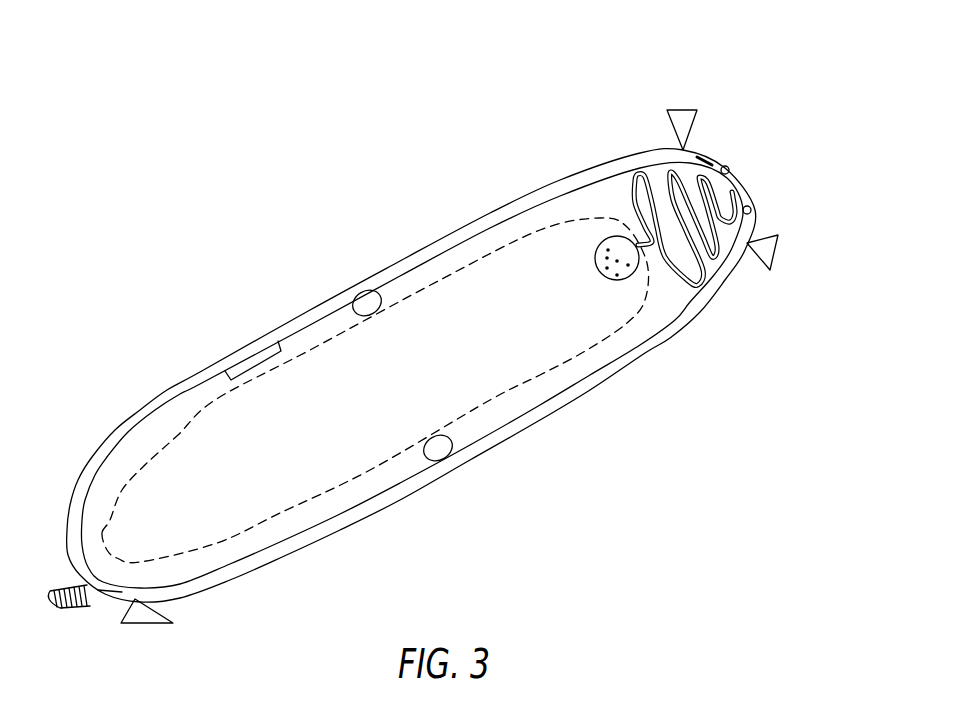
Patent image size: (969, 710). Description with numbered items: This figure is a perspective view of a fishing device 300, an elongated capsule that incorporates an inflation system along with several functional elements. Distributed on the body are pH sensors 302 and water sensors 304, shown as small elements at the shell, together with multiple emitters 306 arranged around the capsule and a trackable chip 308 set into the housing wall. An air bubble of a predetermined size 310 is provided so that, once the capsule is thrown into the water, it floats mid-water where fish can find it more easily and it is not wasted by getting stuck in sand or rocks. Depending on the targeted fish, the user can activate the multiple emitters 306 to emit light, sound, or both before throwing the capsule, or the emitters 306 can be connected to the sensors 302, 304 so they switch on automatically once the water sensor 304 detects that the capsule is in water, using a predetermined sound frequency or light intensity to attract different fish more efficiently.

The fishing device 300 is at (206, 179).
The pH sensors 302 is at (729, 168).
The water sensors 304 is at (708, 160).
The multiple emitters 306 is at (684, 110).
The trackable chip 308 is at (253, 358).
The air bubble of a predetermined size 310 is at (385, 292).